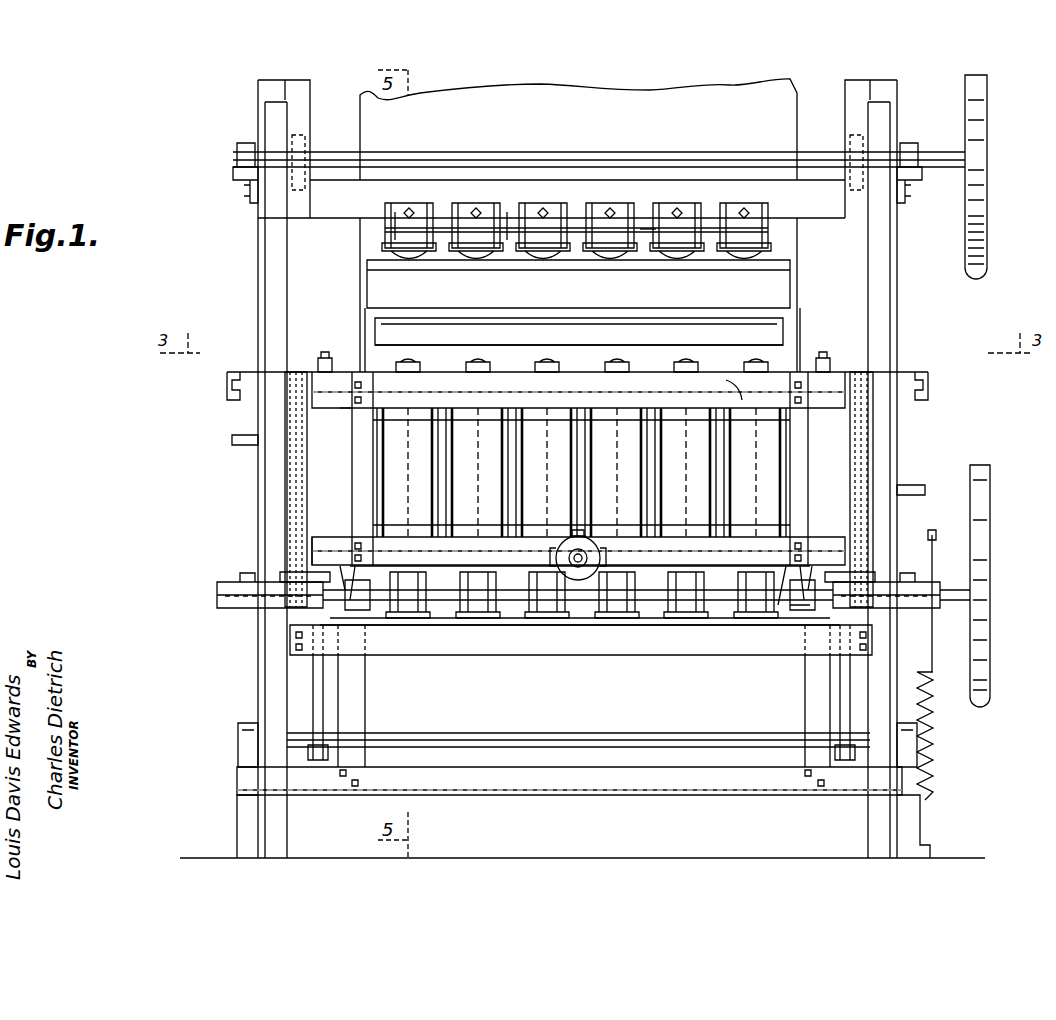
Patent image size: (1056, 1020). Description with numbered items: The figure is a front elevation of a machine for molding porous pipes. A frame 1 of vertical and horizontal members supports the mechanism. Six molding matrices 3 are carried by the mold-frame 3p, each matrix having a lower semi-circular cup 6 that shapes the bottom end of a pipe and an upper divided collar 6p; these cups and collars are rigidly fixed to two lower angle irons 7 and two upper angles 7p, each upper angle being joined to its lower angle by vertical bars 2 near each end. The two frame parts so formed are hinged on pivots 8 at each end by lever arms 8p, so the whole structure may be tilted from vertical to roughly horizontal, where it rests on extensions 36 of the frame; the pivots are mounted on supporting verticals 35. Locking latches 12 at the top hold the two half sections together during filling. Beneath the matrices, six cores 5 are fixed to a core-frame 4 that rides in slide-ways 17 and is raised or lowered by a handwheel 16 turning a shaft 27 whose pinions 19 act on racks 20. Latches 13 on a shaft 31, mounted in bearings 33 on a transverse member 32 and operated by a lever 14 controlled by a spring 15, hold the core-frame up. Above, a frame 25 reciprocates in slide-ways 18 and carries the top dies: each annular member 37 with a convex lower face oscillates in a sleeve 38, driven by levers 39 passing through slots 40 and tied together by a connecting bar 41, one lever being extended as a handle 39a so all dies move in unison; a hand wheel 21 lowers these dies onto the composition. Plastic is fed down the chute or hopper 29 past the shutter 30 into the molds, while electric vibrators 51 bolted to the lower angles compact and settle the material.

The frame 1 is at (258, 238).
The vertical bars 2 is at (362, 450).
The molding matrices 3 is at (410, 465).
The mold-frame 3p is at (588, 370).
The core-frame 4 is at (730, 660).
The cores 5 is at (620, 370).
The semi-circular cup 6 is at (640, 556).
The divided collar 6p is at (742, 402).
The lower angle irons 7 is at (326, 540).
The upper angles 7p is at (348, 402).
The pivots 8 is at (355, 578).
The lever arms 8p is at (347, 570).
The locking latches 12 is at (323, 358).
The latches 13 is at (320, 690).
The lever 14 is at (931, 528).
The spring 15 is at (925, 766).
The handwheel 16 is at (980, 540).
The slide-ways 17 is at (270, 445).
The slide-ways 18 is at (272, 117).
The pinions 19 is at (290, 572).
The racks 20 is at (296, 490).
The hand wheel 21 is at (975, 222).
The frame 25 is at (342, 208).
The shaft 27 is at (790, 560).
The chute or hopper 29 is at (551, 225).
The shutter 30 is at (370, 280).
The shaft 31 is at (550, 740).
The transverse member 32 is at (237, 800).
The bearings 33 is at (240, 725).
The mold-structure supporting verticals 35 is at (352, 710).
The extensions 36 is at (235, 615).
The annular member 37 is at (392, 262).
The sleeve 38 is at (385, 238).
The levers 39 is at (556, 230).
The handle 39a is at (630, 230).
The slots 40 is at (396, 230).
The connecting bar 41 is at (508, 230).
The electric vibrators 51 is at (586, 552).